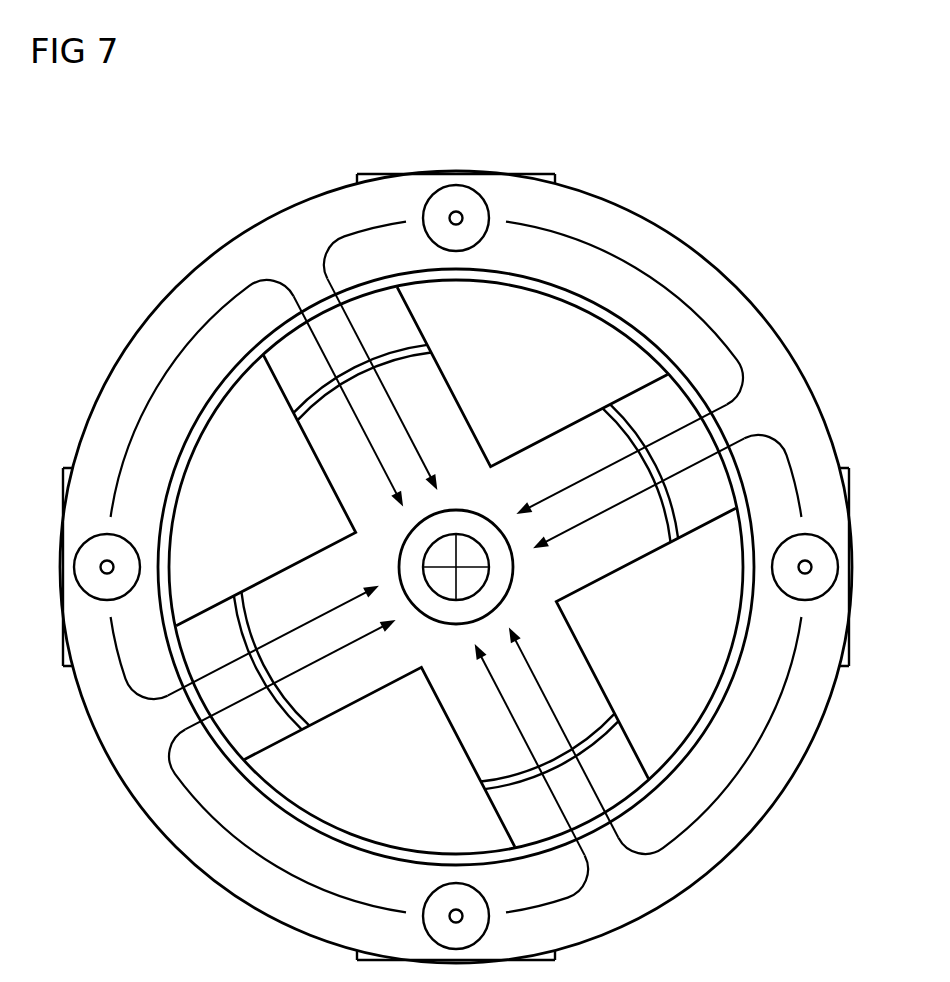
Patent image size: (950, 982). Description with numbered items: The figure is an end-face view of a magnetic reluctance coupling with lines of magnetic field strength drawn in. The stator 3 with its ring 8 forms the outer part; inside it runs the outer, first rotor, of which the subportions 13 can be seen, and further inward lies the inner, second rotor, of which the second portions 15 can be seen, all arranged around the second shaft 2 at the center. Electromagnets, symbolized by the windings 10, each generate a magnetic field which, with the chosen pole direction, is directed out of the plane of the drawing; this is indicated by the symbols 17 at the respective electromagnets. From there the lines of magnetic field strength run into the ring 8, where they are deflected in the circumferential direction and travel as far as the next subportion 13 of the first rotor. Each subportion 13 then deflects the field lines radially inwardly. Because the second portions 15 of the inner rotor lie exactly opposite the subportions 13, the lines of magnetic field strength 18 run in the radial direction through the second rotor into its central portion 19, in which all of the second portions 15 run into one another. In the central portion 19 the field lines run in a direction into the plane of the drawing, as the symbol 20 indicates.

The second shaft 2 is at (509, 568).
The stator 3 is at (208, 203).
The ring 8 is at (633, 226).
The windings 10 is at (545, 174).
The subportions 13 is at (405, 328).
The second portions 15 is at (447, 413).
The symbols 17 is at (463, 186).
The lines of magnetic field strength 18 is at (400, 403).
The central portion 19 is at (507, 508).
The symbol 20 is at (495, 584).